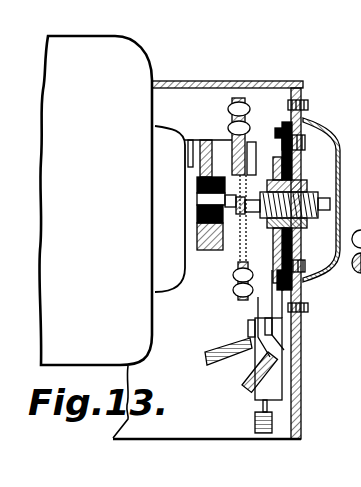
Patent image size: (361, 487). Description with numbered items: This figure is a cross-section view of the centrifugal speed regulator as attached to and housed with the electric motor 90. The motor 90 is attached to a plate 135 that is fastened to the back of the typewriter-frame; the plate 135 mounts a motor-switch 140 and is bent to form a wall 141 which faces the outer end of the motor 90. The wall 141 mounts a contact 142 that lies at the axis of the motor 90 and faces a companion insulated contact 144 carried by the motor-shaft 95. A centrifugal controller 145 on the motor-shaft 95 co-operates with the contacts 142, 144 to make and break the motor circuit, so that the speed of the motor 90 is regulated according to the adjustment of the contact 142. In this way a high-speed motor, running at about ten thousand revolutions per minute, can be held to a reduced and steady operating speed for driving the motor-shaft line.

The electric motor 90 is at (112, 237).
The motor-shaft 95 is at (192, 190).
The plate 135 is at (207, 420).
The motor-switch 140 is at (256, 392).
The wall 141 is at (299, 337).
The contact 142 is at (254, 212).
The insulated contact 144 is at (247, 246).
The centrifugal controller 145 is at (256, 158).